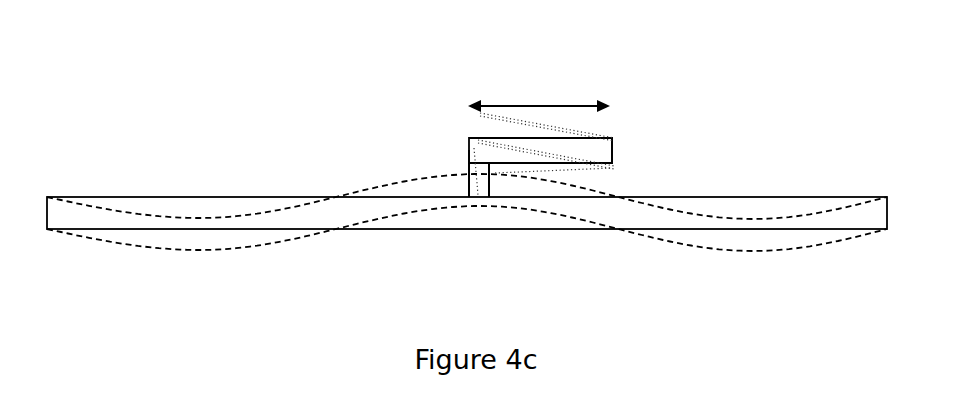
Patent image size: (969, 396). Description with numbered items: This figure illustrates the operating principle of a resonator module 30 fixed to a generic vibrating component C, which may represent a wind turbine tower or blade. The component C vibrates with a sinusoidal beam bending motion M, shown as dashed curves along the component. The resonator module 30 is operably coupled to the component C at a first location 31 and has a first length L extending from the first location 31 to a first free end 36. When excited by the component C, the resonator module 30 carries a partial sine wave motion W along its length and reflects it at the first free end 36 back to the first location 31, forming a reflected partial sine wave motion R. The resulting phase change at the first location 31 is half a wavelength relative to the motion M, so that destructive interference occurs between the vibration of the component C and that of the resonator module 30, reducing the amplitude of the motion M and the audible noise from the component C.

The component C is at (238, 196).
The beam bending motion M is at (753, 252).
The resonator module 30 is at (469, 154).
The first location 31 is at (481, 197).
The first free end 36 is at (612, 148).
The reflected partial sine wave motion R is at (488, 153).
The first length L is at (539, 80).
The first wavelength W is at (570, 129).